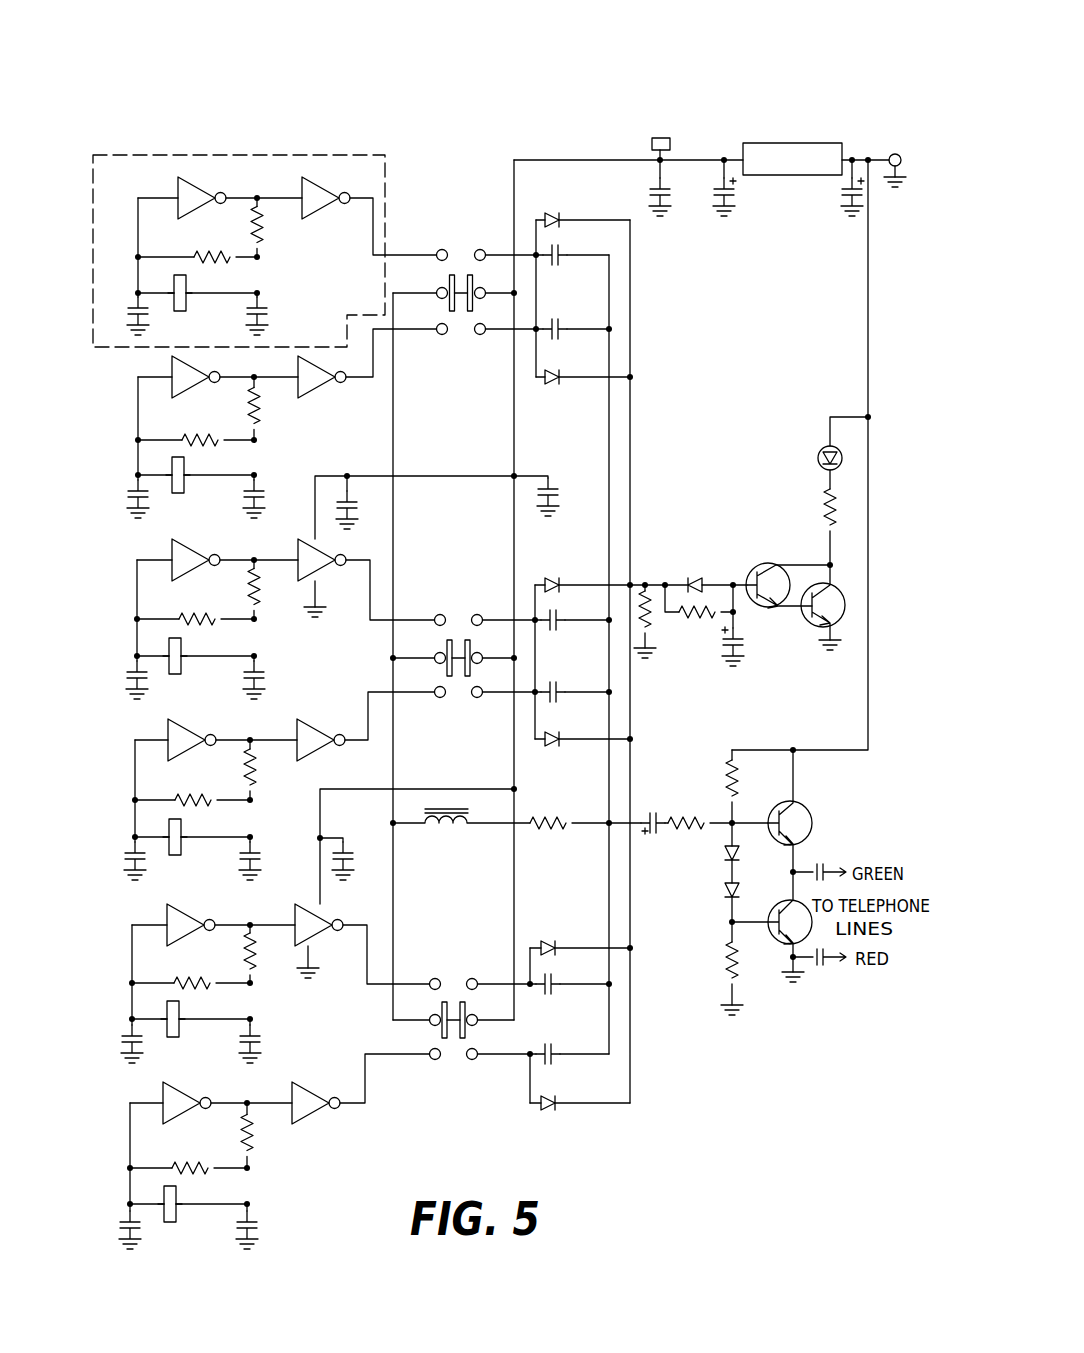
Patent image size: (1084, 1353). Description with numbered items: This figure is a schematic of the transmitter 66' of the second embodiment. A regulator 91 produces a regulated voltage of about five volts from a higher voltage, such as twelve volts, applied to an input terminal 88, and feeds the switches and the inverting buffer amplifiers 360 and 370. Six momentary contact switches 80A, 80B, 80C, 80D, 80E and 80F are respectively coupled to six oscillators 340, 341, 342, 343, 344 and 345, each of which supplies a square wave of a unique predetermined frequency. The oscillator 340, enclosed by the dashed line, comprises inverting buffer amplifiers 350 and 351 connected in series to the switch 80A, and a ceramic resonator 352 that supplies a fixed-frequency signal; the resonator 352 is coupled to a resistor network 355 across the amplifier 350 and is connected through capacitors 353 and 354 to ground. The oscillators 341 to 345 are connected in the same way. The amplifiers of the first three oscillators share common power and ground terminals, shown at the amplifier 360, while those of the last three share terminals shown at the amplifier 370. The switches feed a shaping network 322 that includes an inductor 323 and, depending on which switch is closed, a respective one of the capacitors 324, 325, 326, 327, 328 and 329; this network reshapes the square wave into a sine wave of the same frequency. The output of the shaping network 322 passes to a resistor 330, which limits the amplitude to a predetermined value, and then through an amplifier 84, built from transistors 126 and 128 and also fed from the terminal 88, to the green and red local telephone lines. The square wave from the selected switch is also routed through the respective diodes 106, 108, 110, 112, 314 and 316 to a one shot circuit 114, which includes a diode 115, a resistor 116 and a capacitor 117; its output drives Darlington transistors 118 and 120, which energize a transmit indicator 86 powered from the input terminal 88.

The transmitter 66' is at (272, 50).
The oscillator 340 is at (143, 157).
The oscillator 341 is at (119, 448).
The oscillator 342 is at (119, 636).
The oscillator 343 is at (119, 816).
The oscillator 344 is at (112, 999).
The oscillator 345 is at (109, 1184).
The inverting buffer amplifier 350 is at (174, 220).
The inverting buffer amplifier 351 is at (303, 228).
The ceramic resonator 352 is at (190, 322).
The capacitor 353 is at (118, 315).
The capacitor 354 is at (285, 318).
The resistor network 355 is at (268, 272).
The inverting buffer amplifier 360 is at (297, 608).
The inverting buffer amplifier 370 is at (289, 972).
The shaping network 322 is at (410, 893).
The inductor 323 is at (440, 843).
The switch 80A is at (465, 242).
The switch 80B is at (468, 341).
The switch 80C is at (464, 610).
The switch 80D is at (462, 702).
The switch 80E is at (458, 974).
The switch 80F is at (452, 1066).
The diode 106 is at (561, 216).
The diode 108 is at (558, 392).
The diode 110 is at (573, 577).
The diode 112 is at (558, 763).
The diode 314 is at (567, 938).
The diode 316 is at (555, 1128).
The capacitor 324 is at (560, 282).
The capacitor 325 is at (560, 340).
The capacitor 326 is at (560, 642).
The capacitor 327 is at (562, 704).
The capacitor 328 is at (560, 1002).
The capacitor 329 is at (563, 1073).
The resistor 330 is at (690, 811).
The one shot circuit 114 is at (708, 684).
The diode 115 is at (705, 573).
The resistor 116 is at (712, 626).
The capacitor 117 is at (752, 649).
The Darlington transistor 118 is at (774, 566).
The Darlington transistor 120 is at (810, 642).
The transistor 126 is at (813, 826).
The transistor 128 is at (773, 944).
The transmit indicator 86 is at (812, 462).
The input terminal 88 is at (896, 137).
The regulator 91 is at (792, 159).
The amplifier 84 is at (780, 1067).